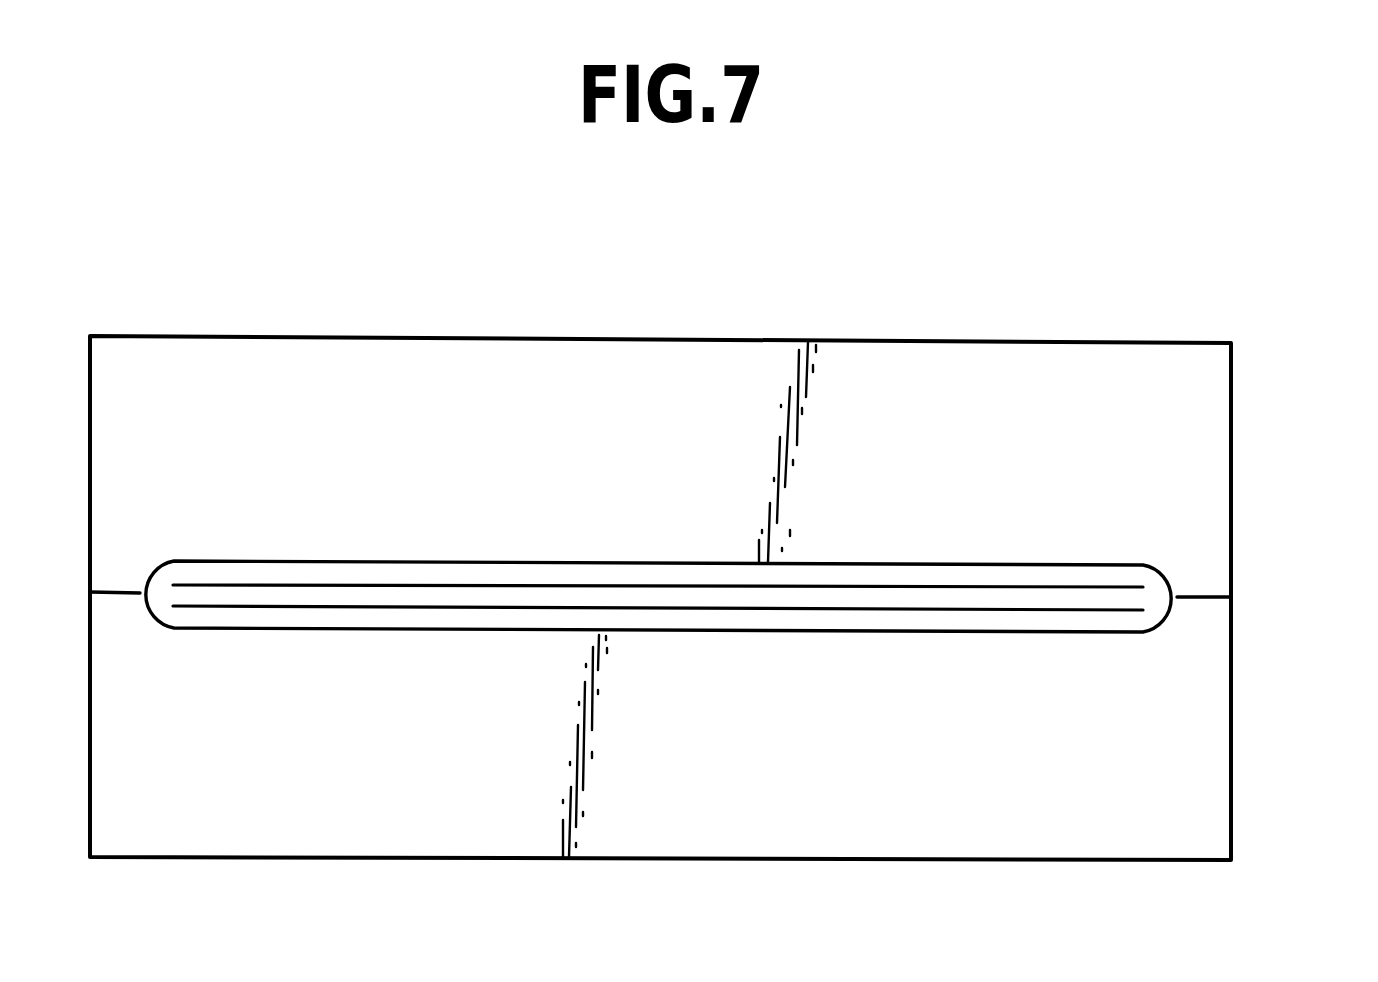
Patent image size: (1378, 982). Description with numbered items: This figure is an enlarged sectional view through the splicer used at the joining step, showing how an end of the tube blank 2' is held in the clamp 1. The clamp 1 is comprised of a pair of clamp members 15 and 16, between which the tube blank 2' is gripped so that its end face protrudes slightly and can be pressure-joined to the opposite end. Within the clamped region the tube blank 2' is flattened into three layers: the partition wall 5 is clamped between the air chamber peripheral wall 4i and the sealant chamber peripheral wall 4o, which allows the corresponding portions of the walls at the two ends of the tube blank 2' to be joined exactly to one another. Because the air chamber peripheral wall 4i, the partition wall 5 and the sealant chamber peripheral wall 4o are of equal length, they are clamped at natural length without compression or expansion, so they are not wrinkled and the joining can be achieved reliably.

The laminated body 1 is at (1315, 402).
The clamp member 15 is at (1203, 435).
The clamp member 16 is at (1200, 722).
The tube blank 2' is at (658, 574).
The sealant chamber peripheral wall 4o is at (442, 561).
The air chamber peripheral wall 4i is at (658, 672).
The partition wall 5 is at (300, 595).